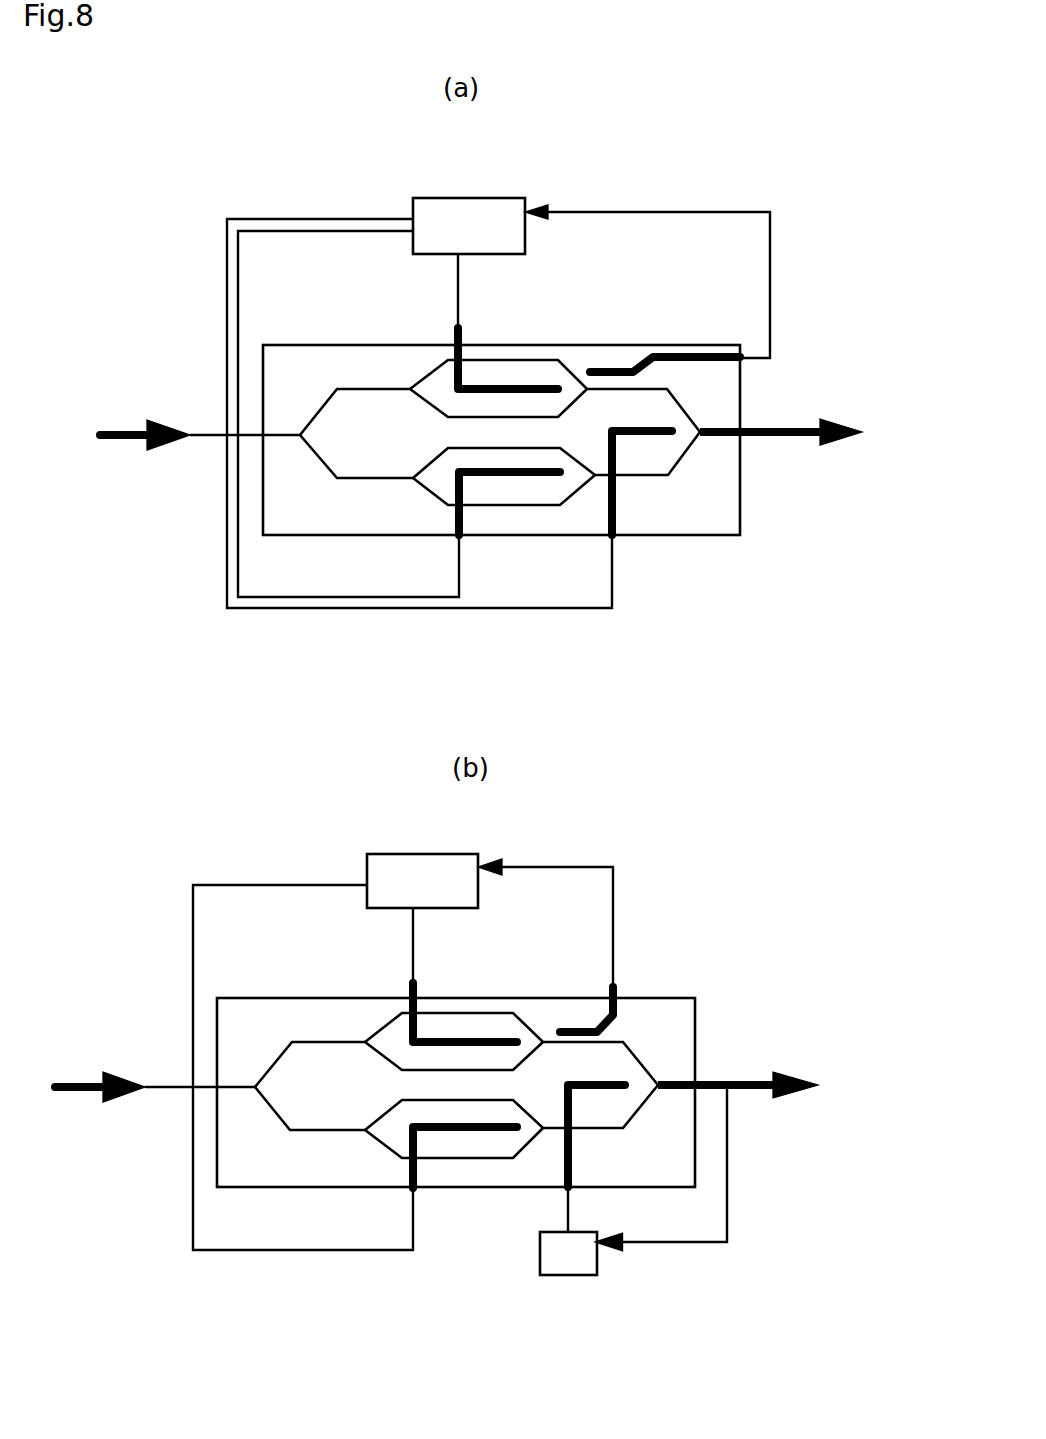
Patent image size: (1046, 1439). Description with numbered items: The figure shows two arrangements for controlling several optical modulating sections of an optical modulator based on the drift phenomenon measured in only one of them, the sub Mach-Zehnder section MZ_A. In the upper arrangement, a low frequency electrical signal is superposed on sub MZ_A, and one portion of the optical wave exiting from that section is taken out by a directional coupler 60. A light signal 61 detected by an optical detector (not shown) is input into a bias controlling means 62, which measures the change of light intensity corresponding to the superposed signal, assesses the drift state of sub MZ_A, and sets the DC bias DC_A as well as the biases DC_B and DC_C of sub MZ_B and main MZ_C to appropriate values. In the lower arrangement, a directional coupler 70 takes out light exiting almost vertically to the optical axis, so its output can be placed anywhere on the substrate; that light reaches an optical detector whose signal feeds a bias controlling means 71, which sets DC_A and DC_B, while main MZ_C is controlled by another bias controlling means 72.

The directional coupler 60 is at (695, 362).
The light signal 61 is at (770, 273).
The bias controlling means 62 is at (498, 198).
The directional coupler 70 is at (617, 997).
The bias controlling means 71 is at (460, 855).
The bias controlling means 72 is at (577, 1253).